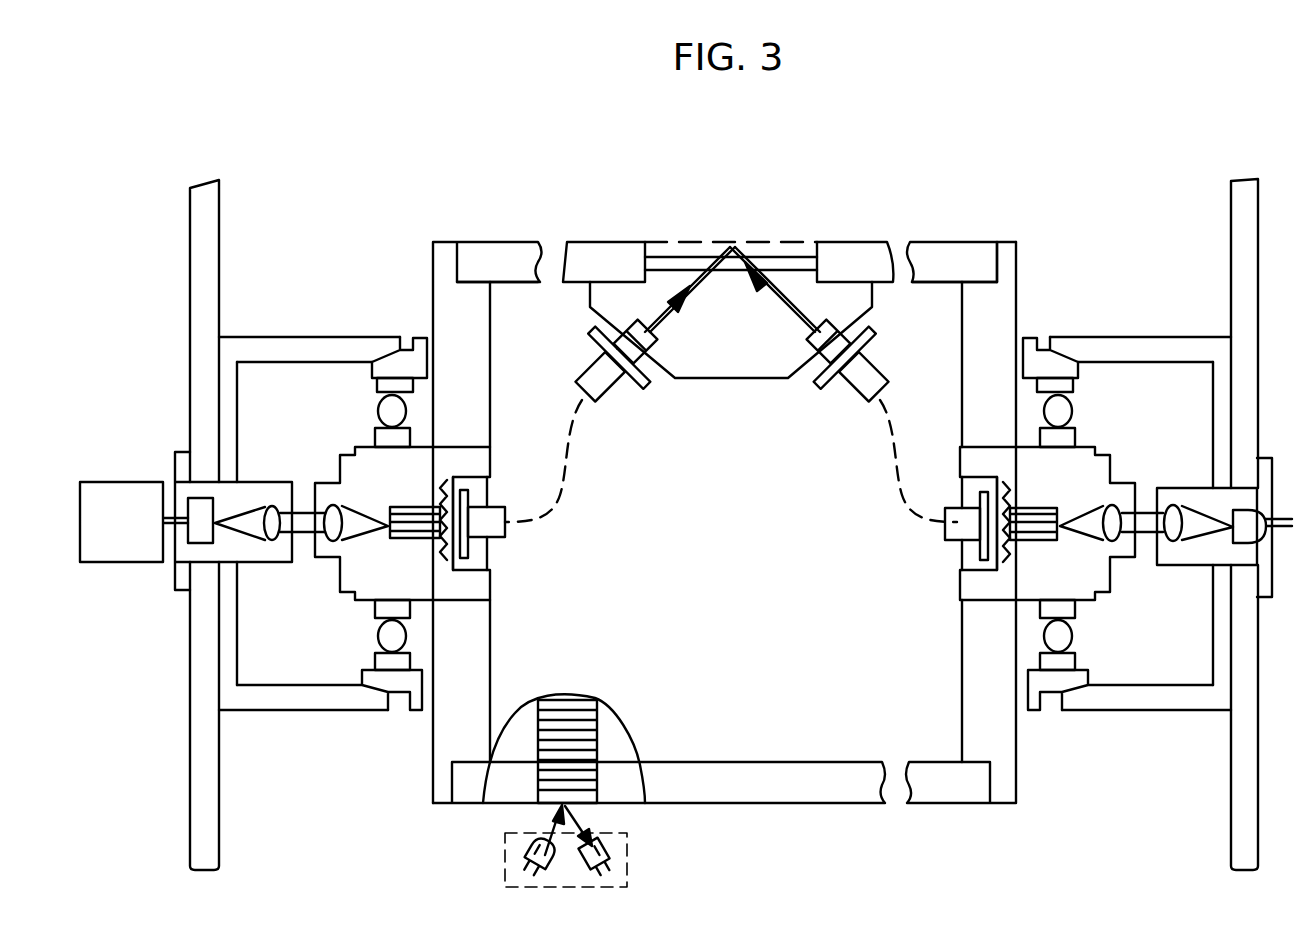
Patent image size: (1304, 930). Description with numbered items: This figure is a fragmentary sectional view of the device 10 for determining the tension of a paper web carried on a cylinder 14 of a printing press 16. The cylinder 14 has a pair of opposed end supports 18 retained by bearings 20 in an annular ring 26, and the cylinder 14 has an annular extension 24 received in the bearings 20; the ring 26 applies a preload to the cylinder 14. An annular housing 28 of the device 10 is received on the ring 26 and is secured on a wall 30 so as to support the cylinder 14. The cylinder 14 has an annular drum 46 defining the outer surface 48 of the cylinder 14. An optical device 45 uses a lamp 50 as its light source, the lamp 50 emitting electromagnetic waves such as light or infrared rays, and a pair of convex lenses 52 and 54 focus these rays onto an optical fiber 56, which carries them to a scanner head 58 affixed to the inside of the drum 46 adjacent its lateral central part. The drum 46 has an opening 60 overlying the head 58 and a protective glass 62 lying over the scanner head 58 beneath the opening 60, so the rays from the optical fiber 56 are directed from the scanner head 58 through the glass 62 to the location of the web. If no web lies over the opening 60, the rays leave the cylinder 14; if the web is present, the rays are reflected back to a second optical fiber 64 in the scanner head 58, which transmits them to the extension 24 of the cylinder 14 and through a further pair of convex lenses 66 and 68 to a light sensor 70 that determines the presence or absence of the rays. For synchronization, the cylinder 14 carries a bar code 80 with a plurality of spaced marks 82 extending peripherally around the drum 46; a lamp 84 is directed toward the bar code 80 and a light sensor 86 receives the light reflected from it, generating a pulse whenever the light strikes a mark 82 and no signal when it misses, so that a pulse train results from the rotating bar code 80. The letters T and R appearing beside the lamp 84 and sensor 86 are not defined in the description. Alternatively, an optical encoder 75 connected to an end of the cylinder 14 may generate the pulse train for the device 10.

The device 10 is at (489, 242).
The cylinder 14 is at (533, 242).
The printing press 16 is at (607, 242).
The end supports 18 is at (430, 257).
The bearings 20 is at (378, 408).
The annular extension 24 is at (412, 582).
The annular ring 26 is at (422, 340).
The annular housing 28 is at (281, 337).
The wall 30 is at (222, 238).
The optical device 45 is at (838, 242).
The annular drum 46 is at (928, 242).
The outer surface 48 is at (985, 242).
The lamp 50 is at (1240, 535).
The convex lens 52 is at (1172, 505).
The convex lens 54 is at (1115, 505).
The optical fiber 56 is at (958, 540).
The scanner head 58 is at (762, 347).
The opening 60 is at (648, 250).
The protective glass 62 is at (788, 265).
The second optical fiber 64 is at (612, 380).
The convex lens 66 is at (325, 548).
The convex lens 68 is at (266, 545).
The light sensor 70 is at (195, 505).
The optical encoder 75 is at (118, 557).
The bar code 80 is at (600, 740).
The marks 82 is at (582, 708).
The lamp 84 is at (526, 843).
The light sensor 86 is at (612, 860).
The transmitter T is at (525, 858).
The receiver R is at (602, 848).